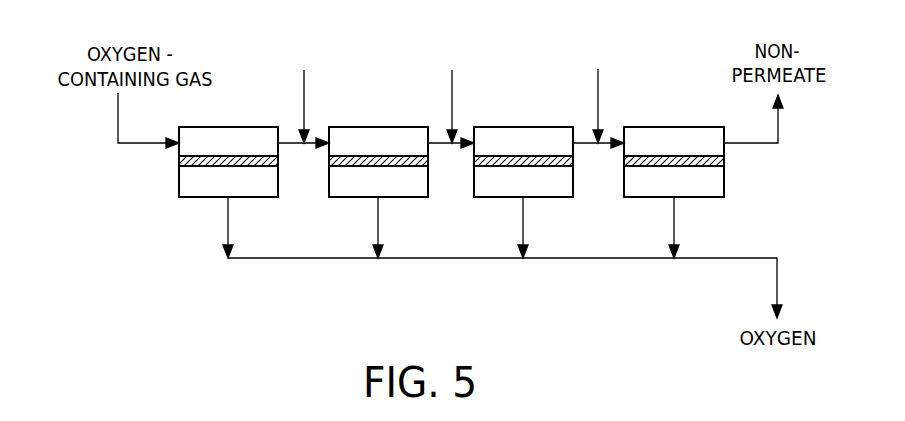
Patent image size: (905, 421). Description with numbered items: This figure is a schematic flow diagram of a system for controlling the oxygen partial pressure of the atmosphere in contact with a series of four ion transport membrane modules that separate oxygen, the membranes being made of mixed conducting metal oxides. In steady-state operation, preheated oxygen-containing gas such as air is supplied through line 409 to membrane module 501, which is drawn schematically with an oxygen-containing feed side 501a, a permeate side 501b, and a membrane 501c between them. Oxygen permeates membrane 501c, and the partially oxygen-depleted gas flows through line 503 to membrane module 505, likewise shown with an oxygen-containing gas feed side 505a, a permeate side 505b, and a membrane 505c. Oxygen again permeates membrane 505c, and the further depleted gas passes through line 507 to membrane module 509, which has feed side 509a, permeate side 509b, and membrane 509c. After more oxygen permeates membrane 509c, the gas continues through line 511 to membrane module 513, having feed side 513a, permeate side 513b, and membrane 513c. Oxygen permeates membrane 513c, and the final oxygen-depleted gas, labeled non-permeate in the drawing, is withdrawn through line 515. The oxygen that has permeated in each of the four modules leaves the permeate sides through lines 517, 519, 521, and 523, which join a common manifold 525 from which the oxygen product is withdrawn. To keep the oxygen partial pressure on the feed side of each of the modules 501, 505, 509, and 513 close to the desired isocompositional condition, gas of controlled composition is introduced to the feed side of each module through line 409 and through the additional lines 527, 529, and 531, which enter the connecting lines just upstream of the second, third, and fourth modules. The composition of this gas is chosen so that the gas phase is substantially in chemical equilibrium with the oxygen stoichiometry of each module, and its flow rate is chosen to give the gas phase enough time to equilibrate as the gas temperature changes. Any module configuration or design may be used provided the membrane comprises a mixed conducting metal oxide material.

The line 409 is at (138, 144).
The membrane module 501 is at (183, 198).
The oxygen-containing feed side 501a is at (202, 140).
The permeate side 501b is at (240, 182).
The membrane 501c is at (243, 156).
The line 503 is at (290, 145).
The membrane module 505 is at (358, 198).
The oxygen-containing gas feed side 505a is at (362, 143).
The permeate side 505b is at (387, 178).
The membrane 505c is at (397, 157).
The line 507 is at (443, 145).
The membrane module 509 is at (503, 198).
The oxygen-containing gas feed side 509a is at (513, 143).
The permeate side 509b is at (540, 182).
The membrane 509c is at (550, 157).
The line 511 is at (587, 145).
The membrane module 513 is at (637, 198).
The oxygen-containing gas feed side 513a is at (646, 147).
The permeate side 513b is at (697, 185).
The membrane 513c is at (683, 157).
The line 515 is at (750, 145).
The line 517 is at (227, 222).
The line 519 is at (377, 225).
The line 521 is at (522, 225).
The line 523 is at (670, 227).
The manifold 525 is at (777, 280).
The line 527 is at (303, 83).
The line 529 is at (451, 92).
The line 531 is at (600, 92).